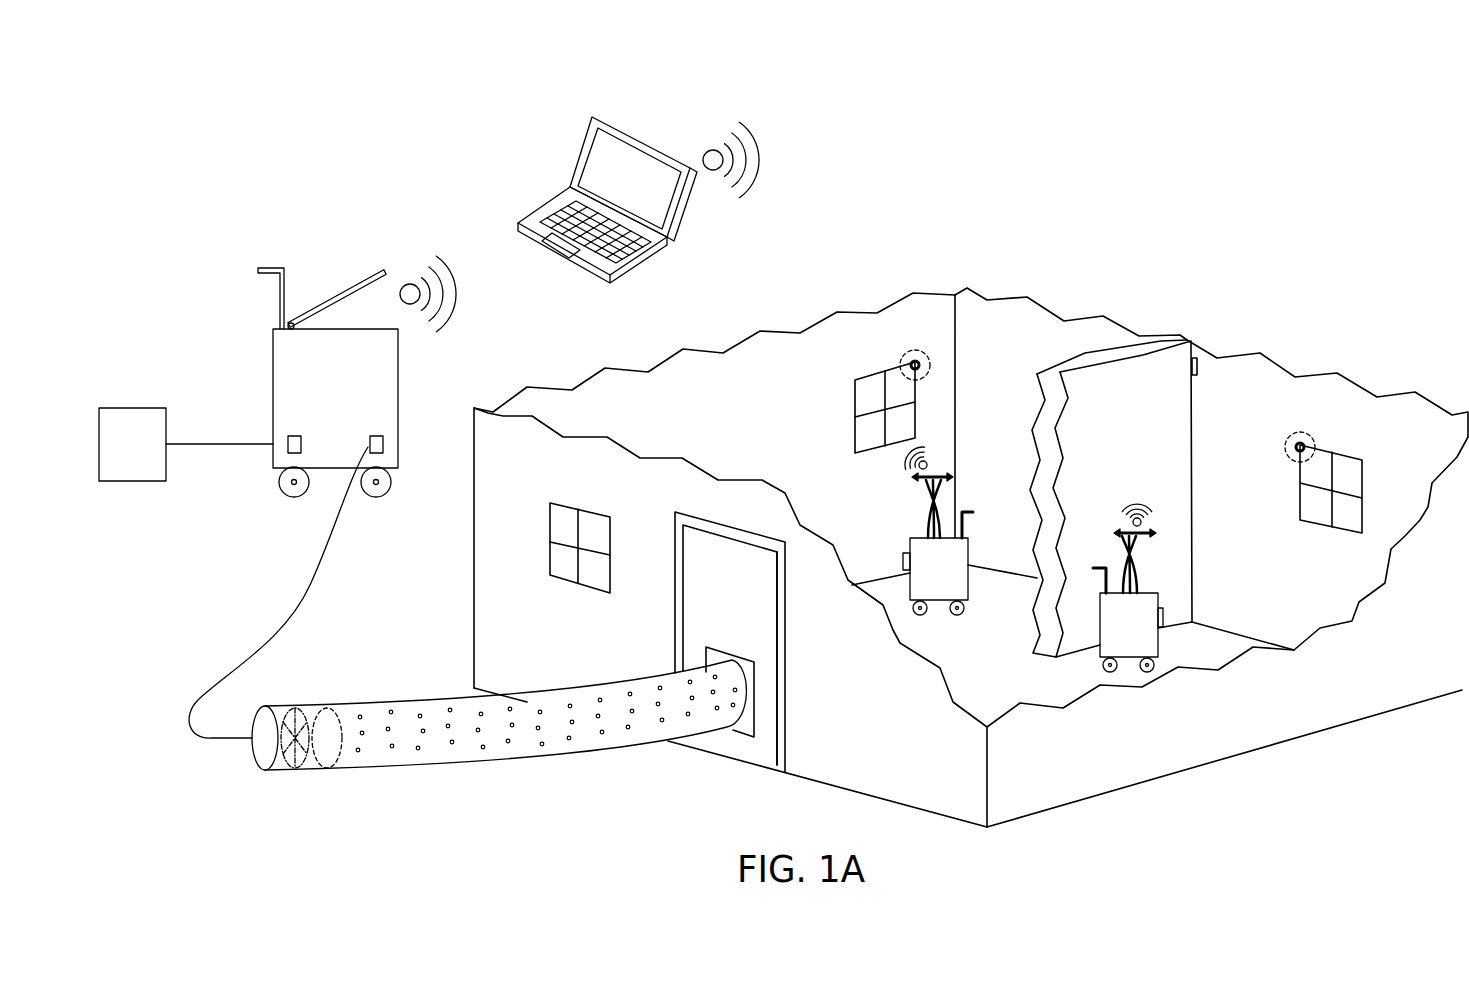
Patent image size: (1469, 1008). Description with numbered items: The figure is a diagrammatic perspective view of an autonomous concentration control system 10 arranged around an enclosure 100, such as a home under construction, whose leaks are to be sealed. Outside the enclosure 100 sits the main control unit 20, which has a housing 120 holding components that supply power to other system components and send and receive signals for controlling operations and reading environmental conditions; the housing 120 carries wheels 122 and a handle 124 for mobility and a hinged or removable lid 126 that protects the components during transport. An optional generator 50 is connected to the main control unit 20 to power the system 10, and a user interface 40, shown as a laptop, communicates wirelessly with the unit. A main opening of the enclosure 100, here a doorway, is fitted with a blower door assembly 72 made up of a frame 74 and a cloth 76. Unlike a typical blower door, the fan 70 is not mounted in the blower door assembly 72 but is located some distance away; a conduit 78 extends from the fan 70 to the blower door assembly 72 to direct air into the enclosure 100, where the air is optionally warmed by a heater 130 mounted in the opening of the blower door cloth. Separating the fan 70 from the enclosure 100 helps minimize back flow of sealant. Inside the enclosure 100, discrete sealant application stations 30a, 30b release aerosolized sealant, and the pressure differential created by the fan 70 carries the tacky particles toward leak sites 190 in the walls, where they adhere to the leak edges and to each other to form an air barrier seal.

The autonomous concentration control system 10 is at (276, 128).
The main control unit 20 is at (398, 392).
The sealant application station 30a is at (972, 582).
The sealant application station 30b is at (1158, 627).
The user interface 40 is at (645, 145).
The generator 50 is at (131, 408).
The fan 70 is at (295, 770).
The blower door assembly 72 is at (660, 655).
The frame 74 is at (787, 701).
The cloth 76 is at (734, 550).
The conduit 78 is at (402, 702).
The enclosure 100 is at (1296, 762).
The housing 120 is at (273, 378).
The wheels 122 is at (275, 487).
The handle 124 is at (279, 300).
The lid 126 is at (333, 298).
The heater 130 is at (749, 689).
The leak sites 190 is at (932, 367).